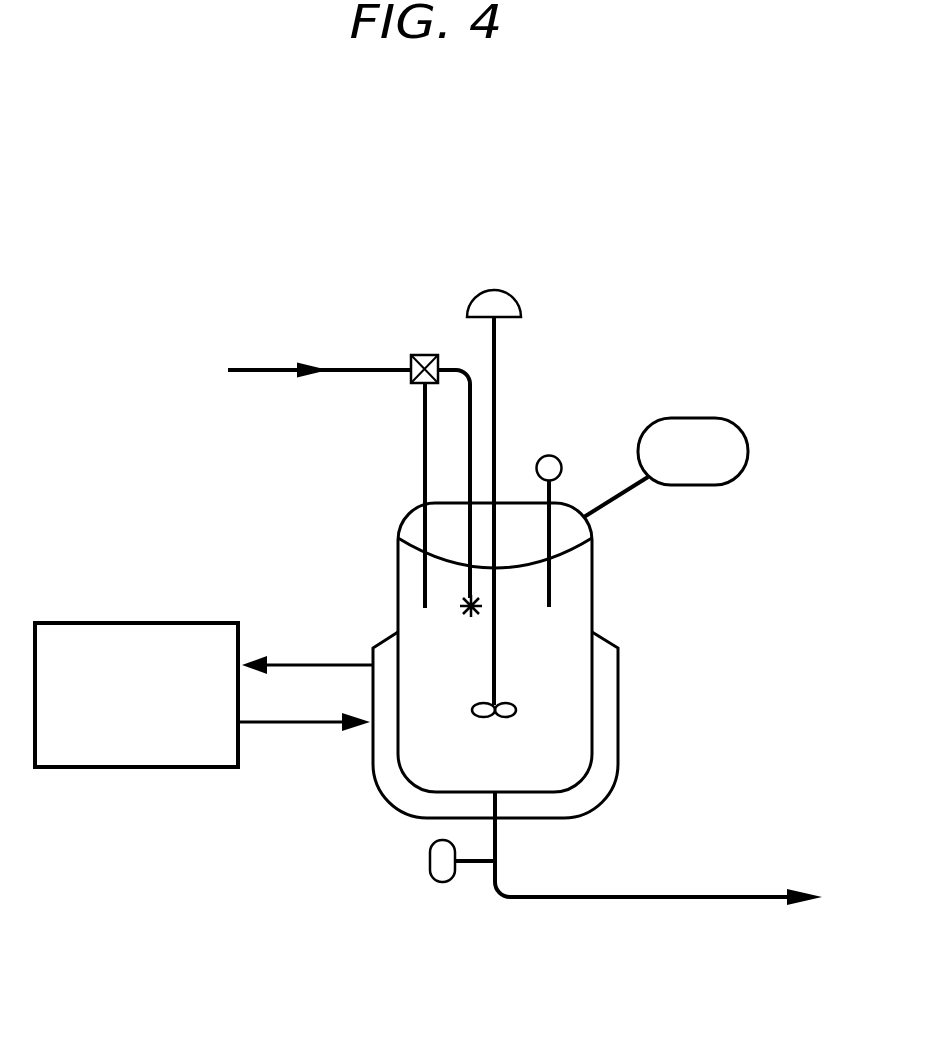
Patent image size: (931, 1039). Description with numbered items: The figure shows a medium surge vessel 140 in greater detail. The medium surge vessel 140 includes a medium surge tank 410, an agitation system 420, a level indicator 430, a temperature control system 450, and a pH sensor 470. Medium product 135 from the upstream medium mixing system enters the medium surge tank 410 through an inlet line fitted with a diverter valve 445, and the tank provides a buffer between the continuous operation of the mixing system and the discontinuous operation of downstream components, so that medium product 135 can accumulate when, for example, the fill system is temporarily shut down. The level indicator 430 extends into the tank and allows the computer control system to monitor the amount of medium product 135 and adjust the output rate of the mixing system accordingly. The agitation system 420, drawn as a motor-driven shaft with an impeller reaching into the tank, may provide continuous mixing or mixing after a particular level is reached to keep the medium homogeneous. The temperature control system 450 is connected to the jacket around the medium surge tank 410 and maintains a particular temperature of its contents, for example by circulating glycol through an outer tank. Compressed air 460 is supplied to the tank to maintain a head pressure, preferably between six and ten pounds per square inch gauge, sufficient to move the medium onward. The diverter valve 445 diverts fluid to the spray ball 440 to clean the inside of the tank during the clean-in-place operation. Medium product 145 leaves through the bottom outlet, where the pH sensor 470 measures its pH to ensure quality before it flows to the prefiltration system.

The medium surge vessel 140 is at (227, 868).
The medium surge tank 410 is at (593, 582).
The medium product 135 is at (253, 370).
The diverter valve 445 is at (420, 355).
The spray ball 440 is at (466, 606).
The agitation system 420 is at (495, 293).
The level indicator 430 is at (552, 455).
The compressed air 460 is at (697, 418).
The temperature control system 450 is at (97, 623).
The medium product 145 is at (707, 893).
The pH sensor 470 is at (443, 883).